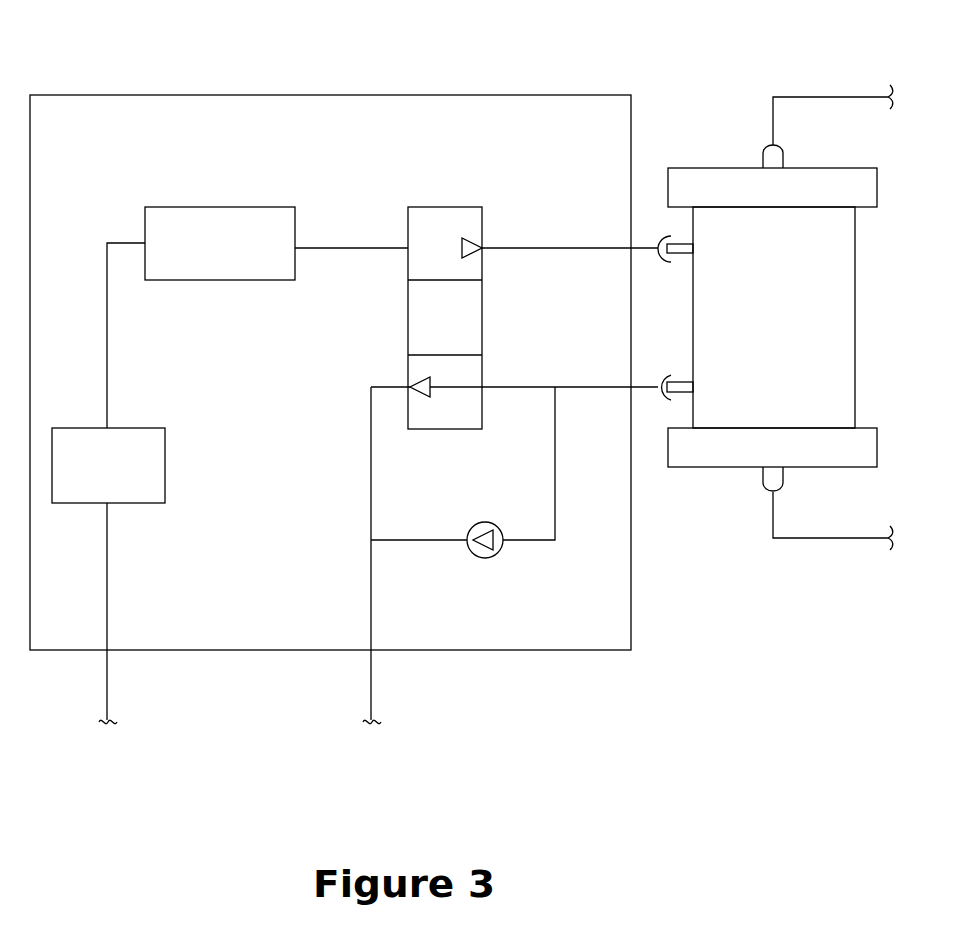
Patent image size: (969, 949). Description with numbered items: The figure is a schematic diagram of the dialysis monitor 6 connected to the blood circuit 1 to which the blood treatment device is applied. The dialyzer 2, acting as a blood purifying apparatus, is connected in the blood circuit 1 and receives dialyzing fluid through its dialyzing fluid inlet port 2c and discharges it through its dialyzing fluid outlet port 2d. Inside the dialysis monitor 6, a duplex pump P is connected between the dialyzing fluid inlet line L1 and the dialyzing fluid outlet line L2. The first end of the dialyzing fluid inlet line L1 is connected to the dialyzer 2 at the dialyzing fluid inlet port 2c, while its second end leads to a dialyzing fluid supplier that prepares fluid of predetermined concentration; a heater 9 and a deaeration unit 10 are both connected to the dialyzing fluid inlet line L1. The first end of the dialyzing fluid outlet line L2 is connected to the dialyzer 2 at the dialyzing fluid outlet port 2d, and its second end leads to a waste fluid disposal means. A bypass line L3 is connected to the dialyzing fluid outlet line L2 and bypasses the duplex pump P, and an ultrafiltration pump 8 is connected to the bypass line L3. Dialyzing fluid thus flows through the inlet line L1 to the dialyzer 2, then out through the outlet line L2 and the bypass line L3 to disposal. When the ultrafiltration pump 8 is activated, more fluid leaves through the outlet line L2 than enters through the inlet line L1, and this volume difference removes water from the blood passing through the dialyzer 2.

The blood circuit 1 is at (820, 62).
The dialyzer 2 is at (881, 301).
The dialyzing fluid inlet port 2c is at (672, 262).
The dialyzing fluid outlet port 2d is at (672, 378).
The dialysis monitor 6 is at (541, 95).
The ultrafiltration pump 8 is at (493, 558).
The heater 9 is at (68, 428).
The deaeration unit 10 is at (268, 283).
The dialyzing fluid inlet line L1 is at (553, 250).
The dialyzing fluid outlet line L2 is at (573, 387).
The bypass line L3 is at (555, 475).
The duplex pump P is at (450, 207).